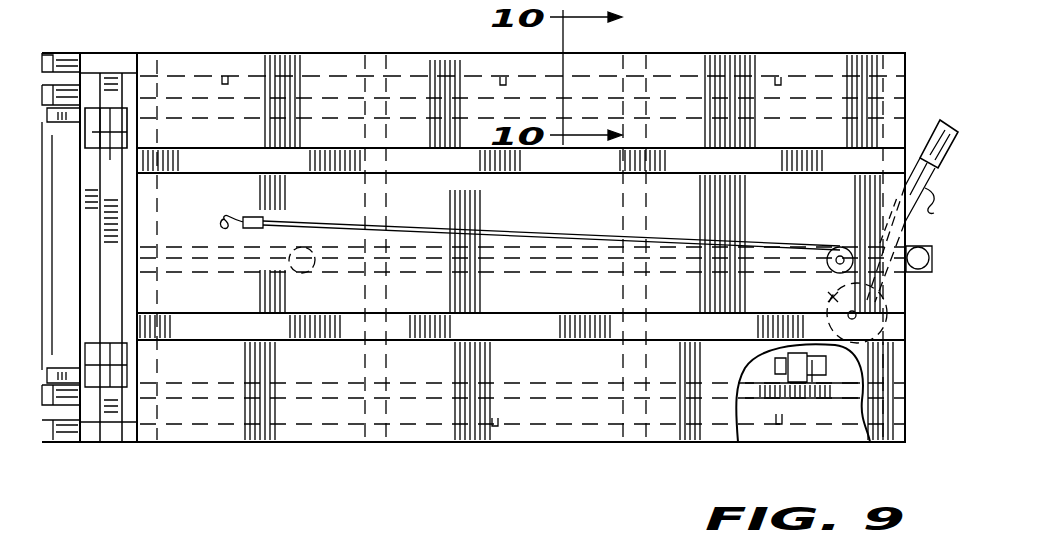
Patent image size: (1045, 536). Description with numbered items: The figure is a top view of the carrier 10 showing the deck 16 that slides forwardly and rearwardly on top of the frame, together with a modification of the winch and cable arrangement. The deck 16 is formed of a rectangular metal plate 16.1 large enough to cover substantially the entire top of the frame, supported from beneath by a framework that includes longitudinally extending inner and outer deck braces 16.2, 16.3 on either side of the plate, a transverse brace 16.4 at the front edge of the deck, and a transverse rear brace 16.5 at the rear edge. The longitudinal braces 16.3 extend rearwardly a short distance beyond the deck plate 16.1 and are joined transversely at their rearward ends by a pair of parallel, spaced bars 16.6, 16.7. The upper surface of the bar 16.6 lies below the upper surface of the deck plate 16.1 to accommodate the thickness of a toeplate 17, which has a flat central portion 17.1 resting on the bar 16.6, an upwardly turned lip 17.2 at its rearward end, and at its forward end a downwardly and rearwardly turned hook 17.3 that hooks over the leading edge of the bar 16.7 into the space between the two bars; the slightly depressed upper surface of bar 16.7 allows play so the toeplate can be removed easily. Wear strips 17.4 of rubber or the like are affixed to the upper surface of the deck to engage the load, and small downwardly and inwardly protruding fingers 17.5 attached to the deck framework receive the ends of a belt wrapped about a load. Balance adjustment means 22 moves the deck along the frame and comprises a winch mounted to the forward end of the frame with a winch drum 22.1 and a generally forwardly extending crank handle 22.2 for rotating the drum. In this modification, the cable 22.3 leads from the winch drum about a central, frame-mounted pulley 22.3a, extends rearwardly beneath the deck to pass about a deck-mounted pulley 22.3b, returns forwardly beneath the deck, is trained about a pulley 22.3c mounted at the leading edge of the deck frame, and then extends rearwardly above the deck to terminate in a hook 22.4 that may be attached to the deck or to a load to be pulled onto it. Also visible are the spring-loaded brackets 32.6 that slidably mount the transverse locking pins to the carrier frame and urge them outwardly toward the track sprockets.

The carrier 10 is at (424, 448).
The deck 16 is at (575, 300).
The rectangular metal plate 16.1 is at (398, 87).
The inner deck brace 16.2 is at (714, 105).
The outer deck brace 16.3 is at (802, 62).
The transverse brace 16.4 is at (886, 405).
The transverse rear brace 16.5 is at (148, 424).
The bar 16.6 is at (92, 442).
The bar 16.7 is at (114, 442).
The toeplate 17 is at (112, 112).
The flat central portion 17.1 is at (110, 150).
The upwardly turned lip 17.2 is at (92, 132).
The hook 17.3 is at (128, 118).
The wear strips 17.4 is at (406, 170).
The fingers 17.5 is at (492, 427).
The balance adjustment means 22 is at (936, 112).
The winch drum 22.1 is at (830, 298).
The crank handle 22.2 is at (926, 217).
The cable 22.3 is at (722, 232).
The central frame-mounted pulley 22.3a is at (840, 247).
The deck-mounted pulley 22.3b is at (296, 262).
The pulley 22.3c is at (918, 270).
The hook 22.4 is at (226, 217).
The spring-loaded brackets 32.6 is at (852, 400).